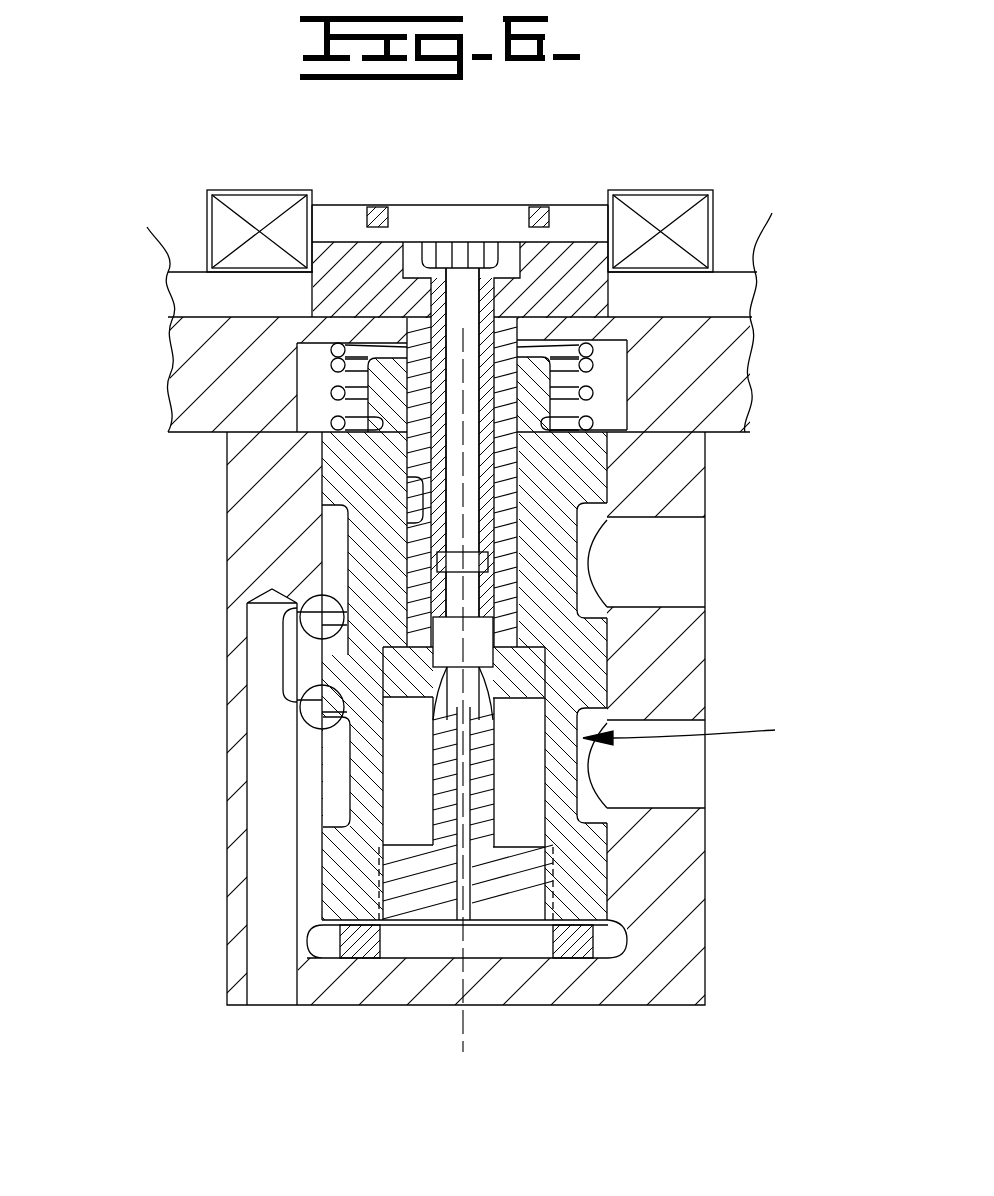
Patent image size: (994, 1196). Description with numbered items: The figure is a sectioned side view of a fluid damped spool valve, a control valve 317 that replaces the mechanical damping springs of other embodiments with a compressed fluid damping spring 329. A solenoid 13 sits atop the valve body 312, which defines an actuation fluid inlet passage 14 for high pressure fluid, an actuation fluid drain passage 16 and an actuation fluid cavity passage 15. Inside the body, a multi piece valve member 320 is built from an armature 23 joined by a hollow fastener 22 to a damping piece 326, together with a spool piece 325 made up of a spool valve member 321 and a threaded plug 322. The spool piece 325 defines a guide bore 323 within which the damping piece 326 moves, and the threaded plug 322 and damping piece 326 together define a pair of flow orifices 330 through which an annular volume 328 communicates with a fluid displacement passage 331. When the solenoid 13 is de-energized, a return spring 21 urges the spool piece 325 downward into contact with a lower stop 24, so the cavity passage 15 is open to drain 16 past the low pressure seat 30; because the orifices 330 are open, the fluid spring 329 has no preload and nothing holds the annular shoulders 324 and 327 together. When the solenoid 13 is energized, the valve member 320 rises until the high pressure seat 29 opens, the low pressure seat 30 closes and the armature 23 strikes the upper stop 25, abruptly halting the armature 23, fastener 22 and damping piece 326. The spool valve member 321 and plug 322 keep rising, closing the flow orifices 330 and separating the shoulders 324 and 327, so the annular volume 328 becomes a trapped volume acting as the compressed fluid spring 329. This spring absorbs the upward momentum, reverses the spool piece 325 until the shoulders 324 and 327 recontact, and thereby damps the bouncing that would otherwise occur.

The solenoid 13 is at (205, 176).
The actuation fluid inlet passage 14 is at (663, 808).
The actuation fluid cavity passage 15 is at (253, 950).
The actuation fluid drain passage 16 is at (675, 606).
The return spring 21 is at (333, 392).
The hollow fastener 22 is at (473, 313).
The armature 23 is at (343, 242).
The lower stop 24 is at (355, 927).
The upper stop 25 is at (547, 234).
The high pressure seat 29 is at (313, 723).
The low pressure seat 30 is at (305, 598).
The valve body 312 is at (712, 991).
The control valve 317 is at (185, 706).
The multi piece valve member 320 is at (706, 728).
The spool valve member 321 is at (348, 548).
The threaded plug 322 is at (508, 927).
The guide bore 323 is at (410, 523).
The annular shoulder 324 is at (535, 642).
The spool piece 325 is at (588, 585).
The damping piece 326 is at (512, 500).
The annular shoulder 327 is at (535, 637).
The annular volume 328 is at (527, 795).
The compressed fluid damping spring 329 is at (405, 795).
The flow orifices 330 is at (447, 697).
The fluid displacement passage 331 is at (447, 593).